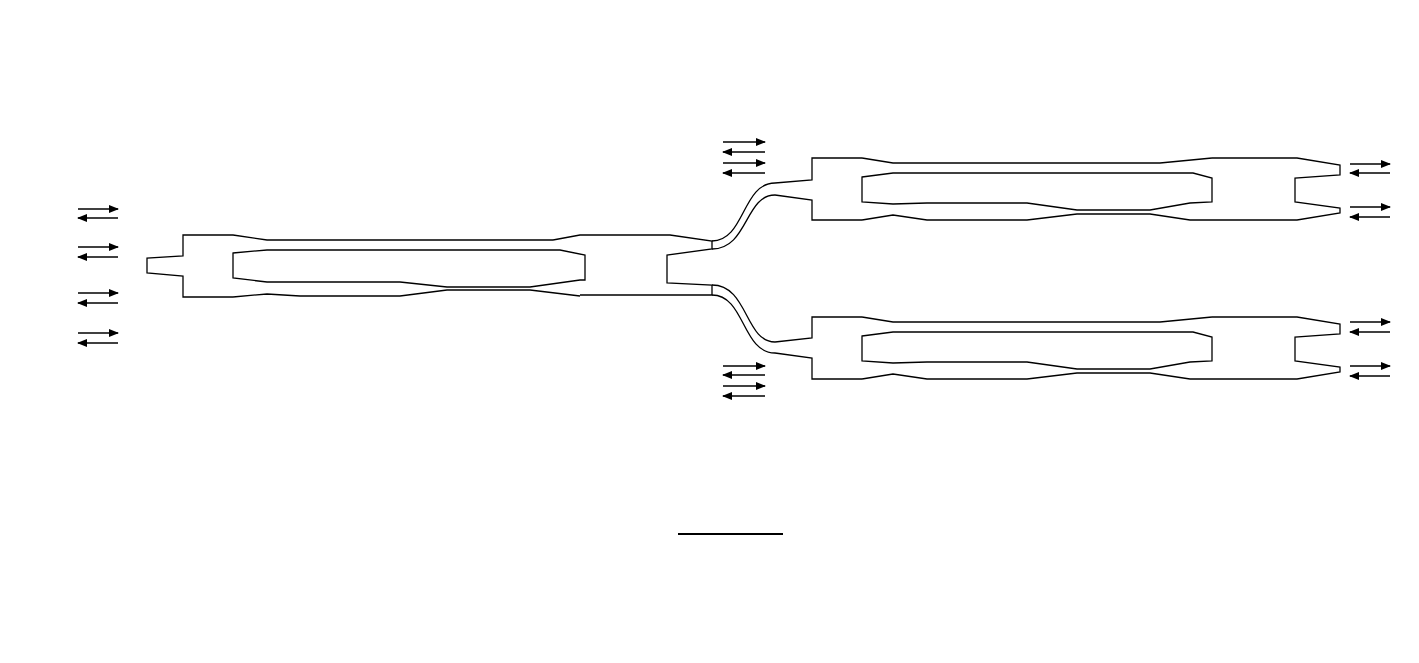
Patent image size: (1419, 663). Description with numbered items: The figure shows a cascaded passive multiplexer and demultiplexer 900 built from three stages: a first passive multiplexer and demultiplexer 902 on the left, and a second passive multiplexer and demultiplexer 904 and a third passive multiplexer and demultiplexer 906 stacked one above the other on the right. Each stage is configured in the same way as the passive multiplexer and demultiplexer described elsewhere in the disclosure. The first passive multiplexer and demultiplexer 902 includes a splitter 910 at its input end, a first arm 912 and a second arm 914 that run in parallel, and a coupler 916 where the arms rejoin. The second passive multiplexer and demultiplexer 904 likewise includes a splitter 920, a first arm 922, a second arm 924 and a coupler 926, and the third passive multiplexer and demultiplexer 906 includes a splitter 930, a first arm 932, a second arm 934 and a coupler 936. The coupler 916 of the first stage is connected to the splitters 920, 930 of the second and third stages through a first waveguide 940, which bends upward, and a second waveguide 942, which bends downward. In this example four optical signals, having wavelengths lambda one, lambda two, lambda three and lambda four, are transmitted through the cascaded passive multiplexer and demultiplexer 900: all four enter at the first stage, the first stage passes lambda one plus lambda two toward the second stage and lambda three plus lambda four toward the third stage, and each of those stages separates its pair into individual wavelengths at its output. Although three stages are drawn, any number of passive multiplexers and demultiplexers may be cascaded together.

The cascaded passive multiplexer and demultiplexer 900 is at (318, 78).
The first passive multiplexer and demultiplexer 902 is at (265, 187).
The second passive multiplexer and demultiplexer 904 is at (1267, 88).
The third passive multiplexer and demultiplexer 906 is at (1240, 402).
The splitter 910 is at (217, 235).
The first arm 912 is at (365, 240).
The second arm 914 is at (418, 296).
The coupler 916 is at (620, 236).
The splitter 920 is at (848, 158).
The first arm 922 is at (1040, 163).
The second arm 924 is at (1052, 220).
The coupler 926 is at (1248, 158).
The splitter 930 is at (850, 317).
The first arm 932 is at (975, 322).
The second arm 934 is at (1055, 379).
The coupler 936 is at (1248, 317).
The first waveguide 940 is at (740, 217).
The second waveguide 942 is at (740, 313).